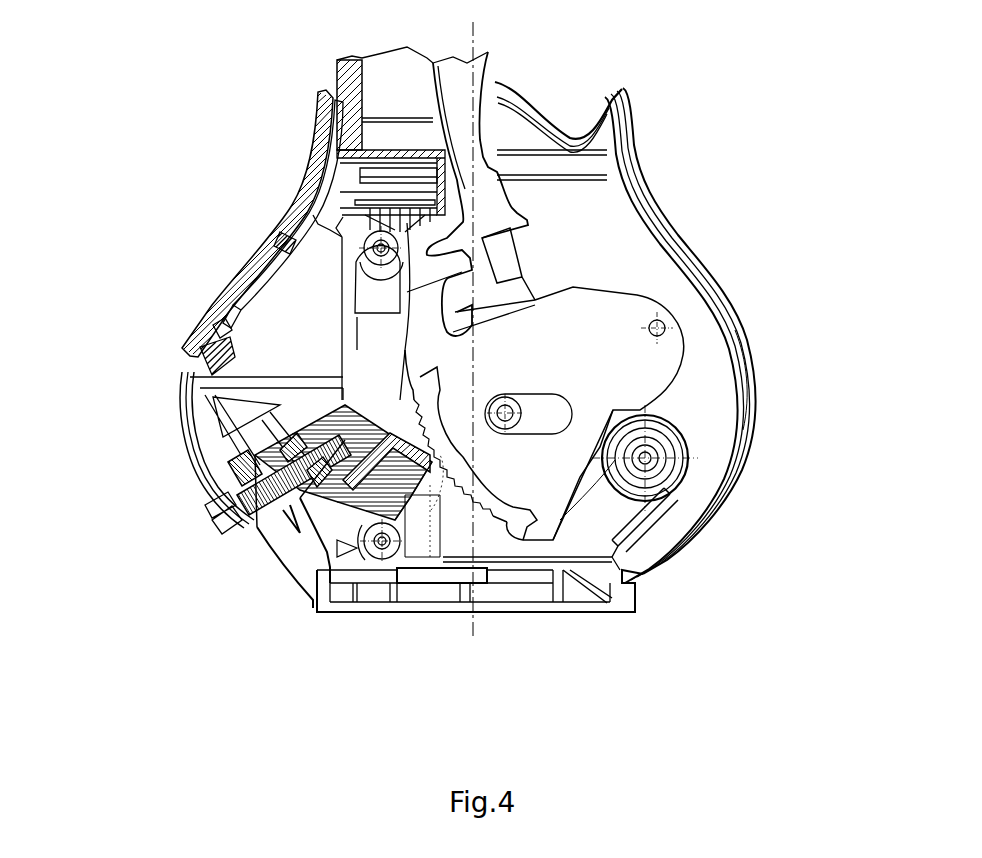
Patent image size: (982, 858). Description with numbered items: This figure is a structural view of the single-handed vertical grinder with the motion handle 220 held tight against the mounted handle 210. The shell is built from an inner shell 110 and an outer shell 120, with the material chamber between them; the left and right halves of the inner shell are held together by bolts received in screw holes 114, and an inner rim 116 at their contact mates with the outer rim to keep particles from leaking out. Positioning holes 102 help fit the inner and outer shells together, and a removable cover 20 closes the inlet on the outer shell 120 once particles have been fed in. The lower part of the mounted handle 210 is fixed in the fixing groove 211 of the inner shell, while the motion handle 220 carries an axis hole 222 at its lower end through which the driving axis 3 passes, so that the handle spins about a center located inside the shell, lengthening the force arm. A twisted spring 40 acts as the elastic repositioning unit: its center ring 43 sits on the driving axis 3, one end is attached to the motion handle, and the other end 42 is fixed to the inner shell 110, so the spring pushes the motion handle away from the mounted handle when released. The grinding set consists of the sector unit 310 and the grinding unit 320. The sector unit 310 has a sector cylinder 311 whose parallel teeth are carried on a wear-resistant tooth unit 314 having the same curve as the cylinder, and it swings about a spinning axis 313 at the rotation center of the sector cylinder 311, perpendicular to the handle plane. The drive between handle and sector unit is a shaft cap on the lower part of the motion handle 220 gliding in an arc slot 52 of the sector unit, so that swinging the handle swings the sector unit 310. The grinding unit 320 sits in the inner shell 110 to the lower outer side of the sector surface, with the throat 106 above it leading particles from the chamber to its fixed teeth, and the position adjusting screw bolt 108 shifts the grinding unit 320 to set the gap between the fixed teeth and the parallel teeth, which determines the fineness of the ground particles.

The removable cover 20 is at (238, 253).
The driving axis 3 is at (655, 478).
The twisted spring 40 is at (687, 430).
The other end of the twisted spring 42 is at (620, 543).
The center ring of the spring 43 is at (687, 447).
The arc slot 52 is at (557, 415).
The outlet 102 is at (427, 558).
The throat 106 is at (337, 378).
The position adjusting screw bolt 108 is at (240, 500).
The inner shell 110 is at (213, 428).
The screw holes 114 is at (377, 247).
The inner rim 116 is at (733, 370).
The outer shell 120 is at (650, 187).
The mounted handle 210 is at (363, 82).
The fixing groove 211 is at (338, 140).
The motion handle 220 is at (483, 80).
The axis hole 222 is at (650, 462).
The sector unit 310 is at (547, 477).
The sector cylinder 311 is at (400, 340).
The spinning axis 313 is at (657, 327).
The tooth unit 314 is at (497, 517).
The grinding unit 320 is at (343, 500).